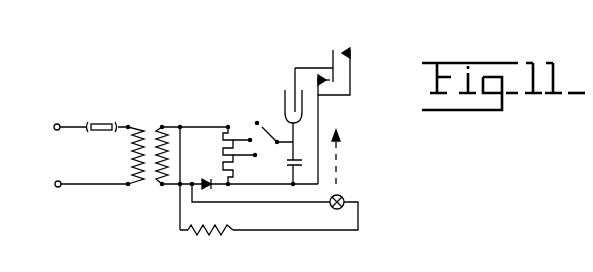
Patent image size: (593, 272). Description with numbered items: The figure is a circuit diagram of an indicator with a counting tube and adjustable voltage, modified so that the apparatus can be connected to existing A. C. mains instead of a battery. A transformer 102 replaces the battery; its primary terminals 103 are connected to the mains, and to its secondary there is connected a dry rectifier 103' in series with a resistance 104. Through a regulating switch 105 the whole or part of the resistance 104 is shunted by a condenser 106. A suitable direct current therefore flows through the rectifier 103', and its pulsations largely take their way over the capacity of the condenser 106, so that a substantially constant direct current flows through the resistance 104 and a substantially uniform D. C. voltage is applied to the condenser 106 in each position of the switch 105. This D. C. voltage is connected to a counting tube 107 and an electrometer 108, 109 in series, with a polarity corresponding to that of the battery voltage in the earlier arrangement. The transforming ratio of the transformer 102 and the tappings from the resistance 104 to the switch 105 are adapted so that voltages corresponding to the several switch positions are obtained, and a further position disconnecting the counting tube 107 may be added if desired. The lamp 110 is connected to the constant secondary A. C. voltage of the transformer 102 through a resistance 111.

The transformer 102 is at (150, 124).
The primary terminals 103 is at (73, 154).
The dry rectifier 103' is at (203, 169).
The resistance 104 is at (224, 143).
The regulating switch 105 is at (257, 121).
The condenser 106 is at (287, 163).
The counting tube 107 is at (285, 90).
The electrometer 108 is at (333, 56).
The electrometer 109 is at (351, 85).
The lamp 110 is at (343, 197).
The resistance 111 is at (224, 234).